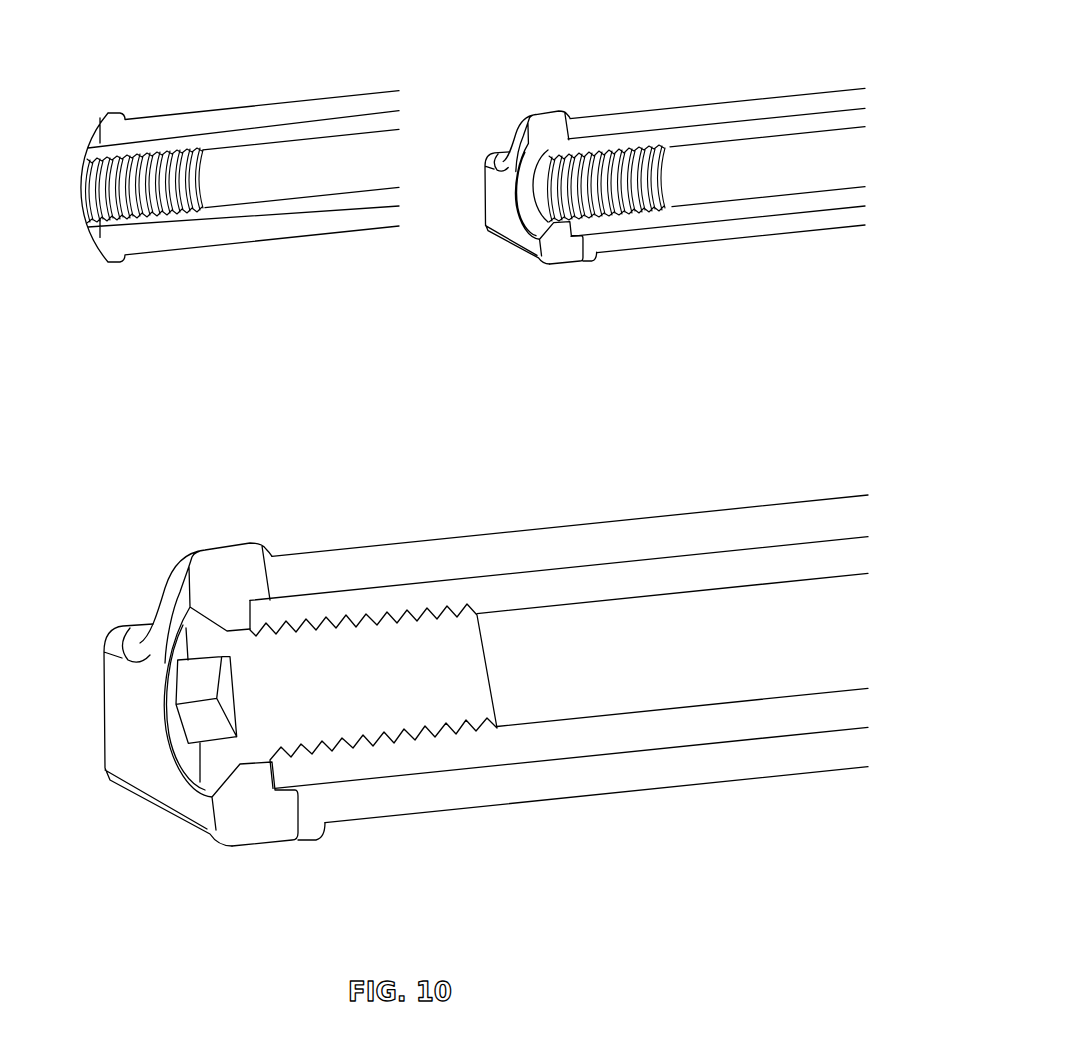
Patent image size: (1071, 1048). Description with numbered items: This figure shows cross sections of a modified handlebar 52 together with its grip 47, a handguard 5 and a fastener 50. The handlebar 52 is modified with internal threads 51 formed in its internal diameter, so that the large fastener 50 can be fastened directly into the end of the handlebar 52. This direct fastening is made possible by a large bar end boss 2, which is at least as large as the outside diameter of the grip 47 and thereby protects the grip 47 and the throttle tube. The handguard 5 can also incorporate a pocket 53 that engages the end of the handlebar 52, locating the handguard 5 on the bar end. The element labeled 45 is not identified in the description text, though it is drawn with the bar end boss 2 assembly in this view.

The bar end boss 2 is at (620, 168).
The bracket 45 is at (517, 208).
The grip 47 is at (145, 192).
The internal threads 51 is at (197, 243).
The handlebar 52 is at (280, 175).
The handguard 5 is at (145, 752).
The fastener 50 is at (280, 715).
The pocket 53 is at (280, 793).